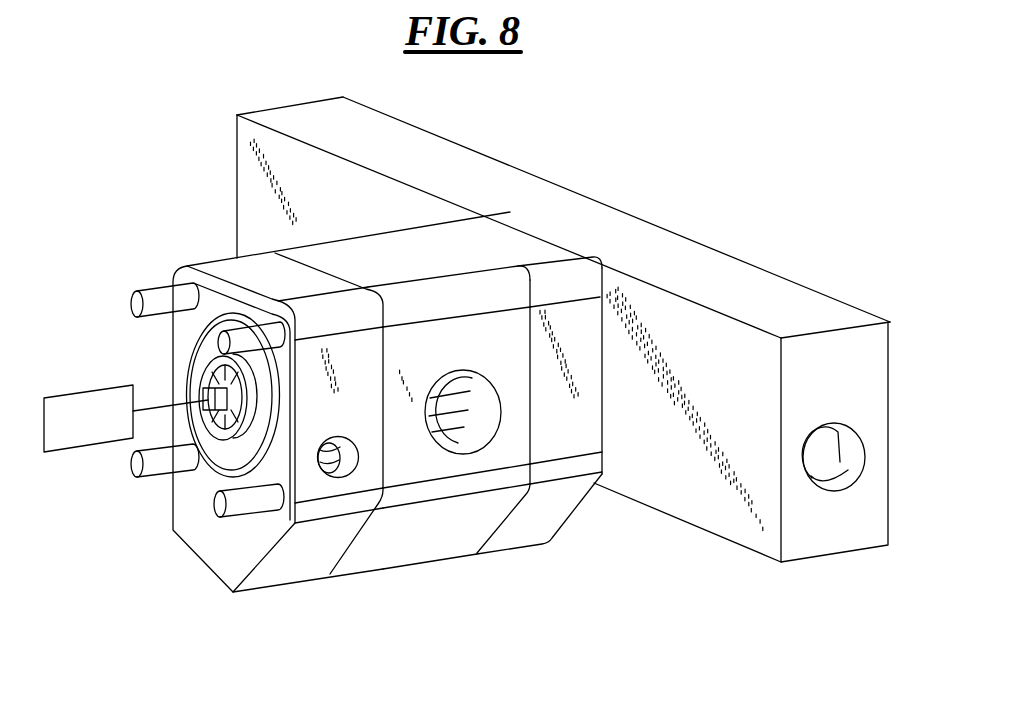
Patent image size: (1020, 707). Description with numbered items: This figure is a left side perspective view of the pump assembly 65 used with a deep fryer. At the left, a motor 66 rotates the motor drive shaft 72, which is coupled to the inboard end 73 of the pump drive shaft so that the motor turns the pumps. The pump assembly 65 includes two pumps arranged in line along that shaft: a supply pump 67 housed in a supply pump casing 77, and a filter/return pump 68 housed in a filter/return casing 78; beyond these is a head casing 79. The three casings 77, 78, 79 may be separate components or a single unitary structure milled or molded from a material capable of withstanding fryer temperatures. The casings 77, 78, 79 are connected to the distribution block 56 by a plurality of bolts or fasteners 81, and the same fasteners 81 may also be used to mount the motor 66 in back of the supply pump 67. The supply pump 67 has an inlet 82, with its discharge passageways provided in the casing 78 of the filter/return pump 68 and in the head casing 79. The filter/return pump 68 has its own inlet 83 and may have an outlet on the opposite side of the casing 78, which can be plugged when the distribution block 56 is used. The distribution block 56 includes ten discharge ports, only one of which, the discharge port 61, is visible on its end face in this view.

The distribution block 56 is at (563, 355).
The discharge port 61 is at (808, 488).
The pump assembly 65 is at (712, 218).
The motor 66 is at (100, 390).
The supply pump 67 is at (400, 363).
The filter/return pump 68 is at (357, 238).
The motor drive shaft 72 is at (156, 405).
The inboard end 73 is at (198, 360).
The supply pump casing 77 is at (192, 314).
The filter/return casing 78 is at (415, 262).
The head casing 79 is at (527, 253).
The bolts or fasteners 81 is at (258, 333).
The inlet 82 is at (323, 476).
The inlet 83 is at (472, 441).